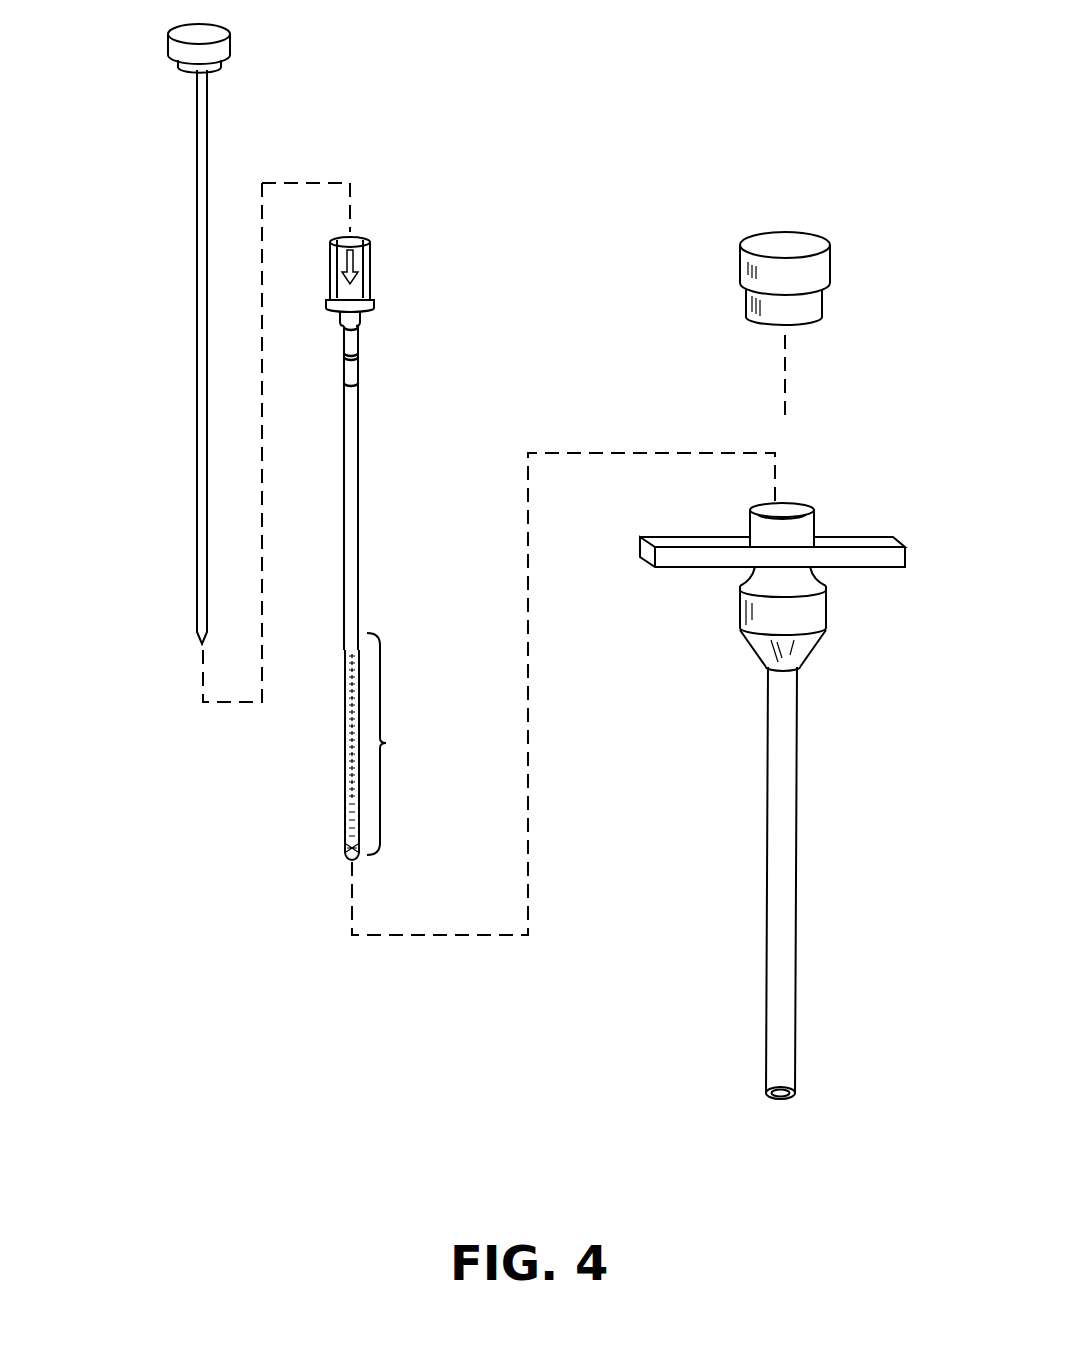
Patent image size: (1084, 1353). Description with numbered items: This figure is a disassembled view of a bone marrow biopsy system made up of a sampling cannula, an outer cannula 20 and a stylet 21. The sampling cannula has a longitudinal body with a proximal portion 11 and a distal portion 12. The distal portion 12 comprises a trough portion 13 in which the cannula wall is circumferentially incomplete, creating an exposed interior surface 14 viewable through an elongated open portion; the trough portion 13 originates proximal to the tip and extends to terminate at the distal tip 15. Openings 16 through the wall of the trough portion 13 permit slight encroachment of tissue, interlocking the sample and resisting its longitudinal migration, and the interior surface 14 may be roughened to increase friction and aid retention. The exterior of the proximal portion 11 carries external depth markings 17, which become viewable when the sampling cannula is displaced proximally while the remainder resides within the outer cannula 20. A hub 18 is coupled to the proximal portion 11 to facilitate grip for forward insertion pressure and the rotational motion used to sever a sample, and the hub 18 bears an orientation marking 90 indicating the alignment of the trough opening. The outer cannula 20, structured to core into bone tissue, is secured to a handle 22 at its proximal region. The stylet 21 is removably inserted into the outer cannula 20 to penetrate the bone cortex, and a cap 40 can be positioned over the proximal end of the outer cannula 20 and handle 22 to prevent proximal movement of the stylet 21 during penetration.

The proximal portion 11 is at (360, 437).
The distal portion 12 is at (360, 617).
The trough portion 13 is at (386, 743).
The interior surface 14 is at (348, 729).
The distal tip 15 is at (352, 862).
The openings 16 is at (347, 832).
The depth markings 17 is at (360, 398).
The hub 18 is at (373, 262).
The outer cannula 20 is at (778, 817).
The stylet 21 is at (197, 228).
The handle 22 is at (825, 553).
The cap 40 is at (800, 245).
The orientation marking 90 is at (370, 243).